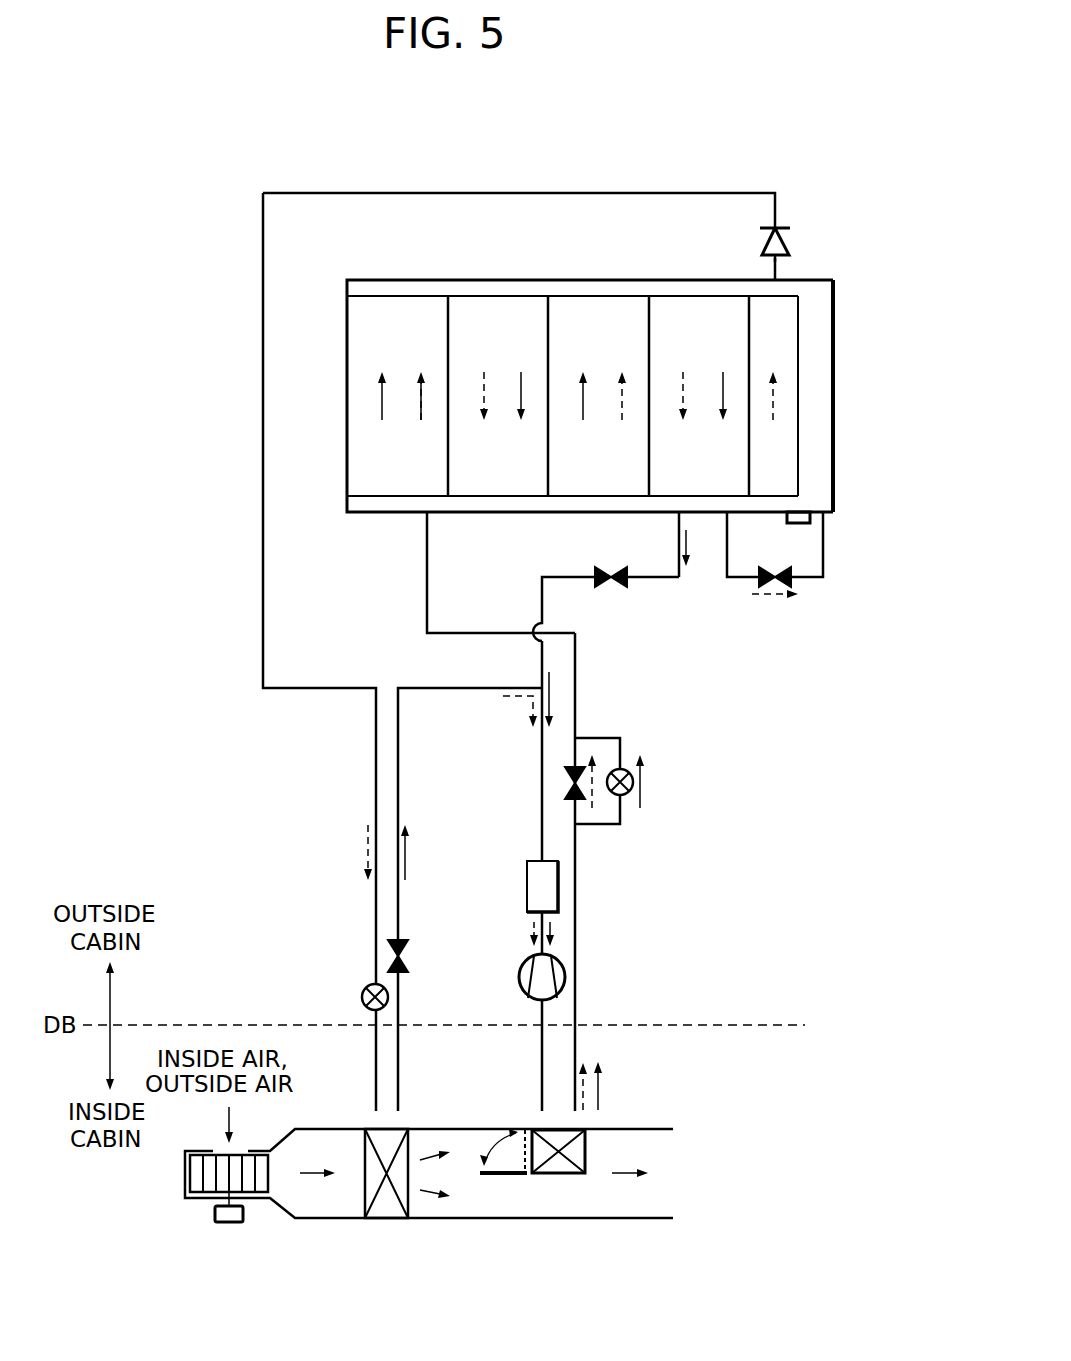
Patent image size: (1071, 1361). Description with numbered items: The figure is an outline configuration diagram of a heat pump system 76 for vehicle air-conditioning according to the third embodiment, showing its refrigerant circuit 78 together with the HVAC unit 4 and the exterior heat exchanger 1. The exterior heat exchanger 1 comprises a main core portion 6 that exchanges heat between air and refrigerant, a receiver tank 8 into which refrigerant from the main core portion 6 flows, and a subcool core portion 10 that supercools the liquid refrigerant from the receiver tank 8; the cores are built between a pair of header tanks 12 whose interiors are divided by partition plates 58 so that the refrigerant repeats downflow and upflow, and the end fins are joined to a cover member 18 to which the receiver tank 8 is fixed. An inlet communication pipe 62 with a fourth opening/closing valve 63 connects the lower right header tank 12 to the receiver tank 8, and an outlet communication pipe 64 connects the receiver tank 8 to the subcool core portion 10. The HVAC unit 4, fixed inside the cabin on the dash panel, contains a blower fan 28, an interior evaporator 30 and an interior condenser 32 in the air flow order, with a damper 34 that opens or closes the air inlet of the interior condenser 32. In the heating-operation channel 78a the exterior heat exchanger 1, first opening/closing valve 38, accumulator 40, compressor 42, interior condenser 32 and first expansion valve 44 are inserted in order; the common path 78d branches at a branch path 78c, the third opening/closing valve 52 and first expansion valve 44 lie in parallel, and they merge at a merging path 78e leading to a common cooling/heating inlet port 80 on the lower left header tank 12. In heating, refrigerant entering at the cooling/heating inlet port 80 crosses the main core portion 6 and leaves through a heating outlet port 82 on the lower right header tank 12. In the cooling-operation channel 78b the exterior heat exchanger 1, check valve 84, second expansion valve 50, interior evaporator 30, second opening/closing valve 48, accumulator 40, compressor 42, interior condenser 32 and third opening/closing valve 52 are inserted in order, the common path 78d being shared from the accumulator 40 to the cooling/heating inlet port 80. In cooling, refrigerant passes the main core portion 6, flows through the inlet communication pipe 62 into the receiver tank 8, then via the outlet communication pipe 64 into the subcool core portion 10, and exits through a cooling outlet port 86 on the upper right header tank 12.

The exterior heat exchanger 1 is at (620, 282).
The HVAC unit 4 is at (625, 1220).
The main core portion 6 is at (522, 325).
The receiver tank 8 is at (821, 292).
The subcool core portion 10 is at (760, 323).
The header tank 12 is at (578, 290).
The cover member 18 is at (347, 352).
The blower fan 28 is at (198, 1185).
The interior evaporator 30 is at (388, 1205).
The interior condenser 32 is at (560, 1170).
The damper 34 is at (497, 1177).
The first opening/closing valve 38 is at (607, 590).
The accumulator 40 is at (527, 876).
The compressor 42 is at (522, 972).
The first expansion valve 44 is at (626, 770).
The second opening/closing valve 48 is at (408, 968).
The second expansion valve 50 is at (368, 986).
The third opening/closing valve 52 is at (565, 777).
The partition plate 58 is at (448, 330).
The inlet communication pipe 62 is at (812, 590).
The fourth opening/closing valve 63 is at (752, 590).
The outlet communication pipe 64 is at (796, 525).
The heat pump system 76 is at (703, 178).
The refrigerant circuit 78 is at (580, 900).
The heating-operation channel 78a is at (652, 590).
The cooling-operation channel 78b is at (262, 495).
The branch path 78c is at (576, 830).
The common path 78d is at (541, 806).
The merging path 78e is at (575, 745).
The cooling/heating inlet port 80 is at (418, 522).
The heating outlet port 82 is at (673, 520).
The check valve 84 is at (780, 222).
The cooling outlet port 86 is at (773, 276).